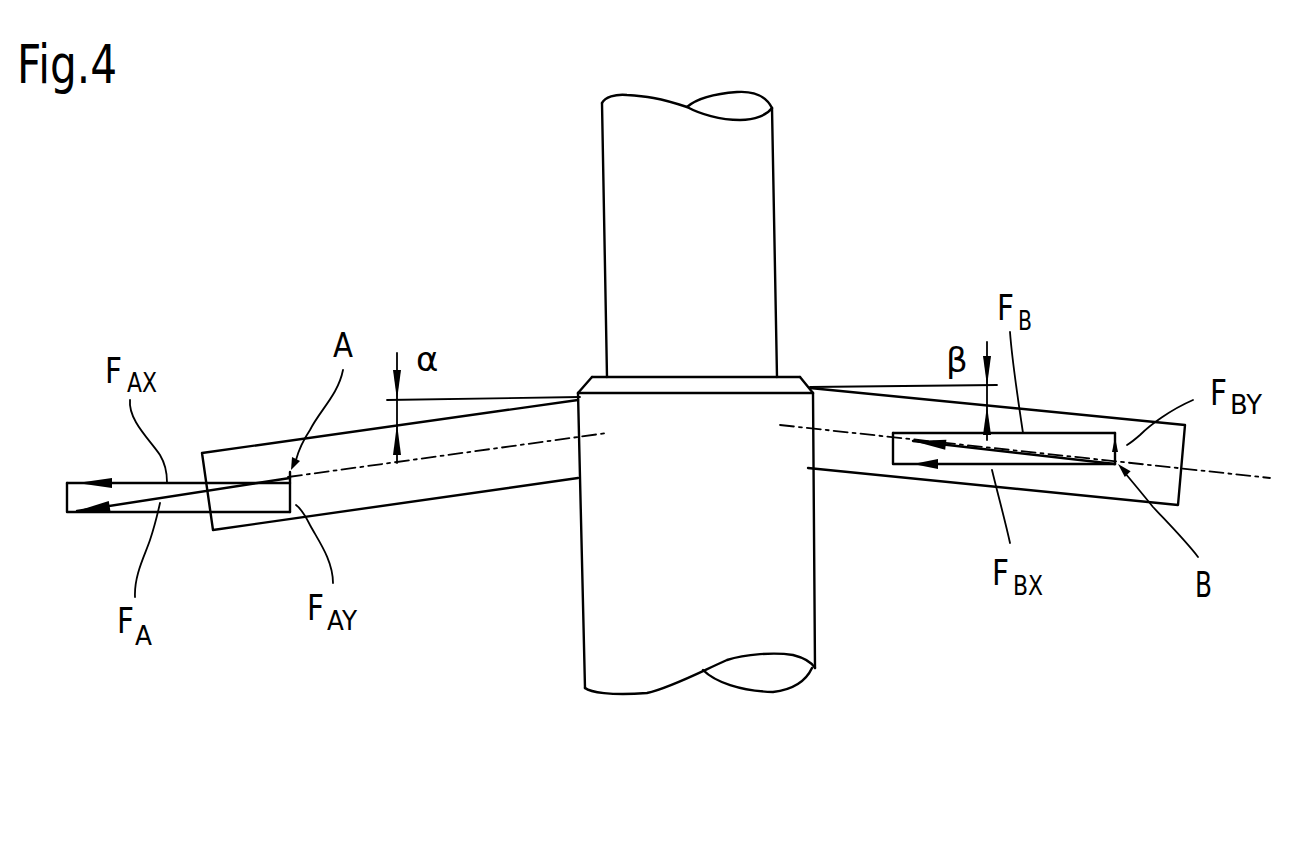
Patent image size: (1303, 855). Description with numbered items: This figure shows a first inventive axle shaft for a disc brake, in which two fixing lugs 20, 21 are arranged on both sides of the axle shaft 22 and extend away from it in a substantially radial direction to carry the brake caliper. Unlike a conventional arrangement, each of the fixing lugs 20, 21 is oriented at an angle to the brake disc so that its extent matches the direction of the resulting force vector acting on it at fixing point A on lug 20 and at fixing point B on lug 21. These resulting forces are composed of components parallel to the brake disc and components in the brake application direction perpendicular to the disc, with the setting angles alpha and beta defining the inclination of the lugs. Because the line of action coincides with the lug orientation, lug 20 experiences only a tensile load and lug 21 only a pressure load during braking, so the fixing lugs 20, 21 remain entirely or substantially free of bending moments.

The fixing lug 20 is at (267, 450).
The fixing lug 21 is at (1073, 425).
The axle shaft 22 is at (757, 633).